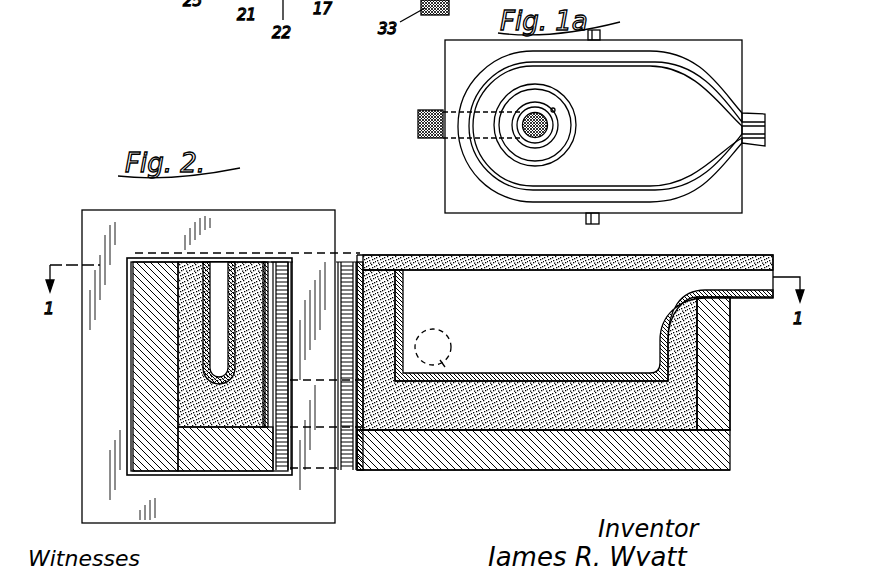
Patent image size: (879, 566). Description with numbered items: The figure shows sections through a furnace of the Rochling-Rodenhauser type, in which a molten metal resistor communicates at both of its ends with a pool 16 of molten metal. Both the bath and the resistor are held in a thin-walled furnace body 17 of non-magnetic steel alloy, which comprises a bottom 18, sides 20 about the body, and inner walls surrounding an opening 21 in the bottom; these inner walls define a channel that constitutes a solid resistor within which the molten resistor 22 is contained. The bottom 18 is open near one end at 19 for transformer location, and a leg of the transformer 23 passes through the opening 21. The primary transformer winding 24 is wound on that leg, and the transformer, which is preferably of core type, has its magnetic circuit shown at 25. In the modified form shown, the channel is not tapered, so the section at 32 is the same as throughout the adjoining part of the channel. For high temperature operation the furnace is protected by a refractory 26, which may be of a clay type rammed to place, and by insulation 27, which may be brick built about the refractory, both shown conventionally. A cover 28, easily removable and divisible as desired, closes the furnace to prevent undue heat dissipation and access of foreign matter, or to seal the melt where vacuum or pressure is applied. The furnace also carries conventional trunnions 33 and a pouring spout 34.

In FIG. 1A, the pool 16 is at (678, 112).
In FIG. 2, the pool 16 is at (586, 309).
In FIG. 1A, the furnace body 17 is at (550, 192).
In FIG. 2, the furnace body 17 is at (268, 295).
In FIG. 1A, the bottom 18 is at (686, 160).
In FIG. 2, the bottom 18 is at (540, 372).
In FIG. 1A, the transformer location opening 19 is at (445, 50).
In FIG. 2, the transformer location opening 19 is at (148, 410).
In FIG. 1A, the sides 20 is at (470, 72).
In FIG. 2, the sides 20 is at (218, 317).
In FIG. 1A, the opening 21 is at (555, 109).
In FIG. 2, the opening 21 is at (432, 249).
In FIG. 1A, the molten resistor 22 is at (550, 172).
In FIG. 2, the molten resistor 22 is at (554, 251).
In FIG. 1A, the transformer 23 is at (417, 127).
In FIG. 2, the transformer 23 is at (212, 502).
In FIG. 1A, the primary transformer winding 24 is at (522, 103).
In FIG. 2, the primary transformer winding 24 is at (277, 470).
In FIG. 1A, the magnetic circuit 25 is at (622, 136).
In FIG. 2, the magnetic circuit 25 is at (92, 382).
In FIG. 1A, the refractory 26 is at (712, 88).
In FIG. 2, the refractory 26 is at (697, 400).
In FIG. 1A, the insulation 27 is at (722, 195).
In FIG. 2, the insulation 27 is at (690, 455).
In FIG. 2, the cover 28 is at (678, 263).
In FIG. 1A, the smallest channel cross section 32 is at (485, 125).
In FIG. 2, the smallest channel cross section 32 is at (233, 285).
In FIG. 1A, the trunnions 33 is at (602, 36).
In FIG. 2, the trunnions 33 is at (442, 364).
In FIG. 1A, the pouring spout 34 is at (750, 130).
In FIG. 2, the pouring spout 34 is at (752, 297).